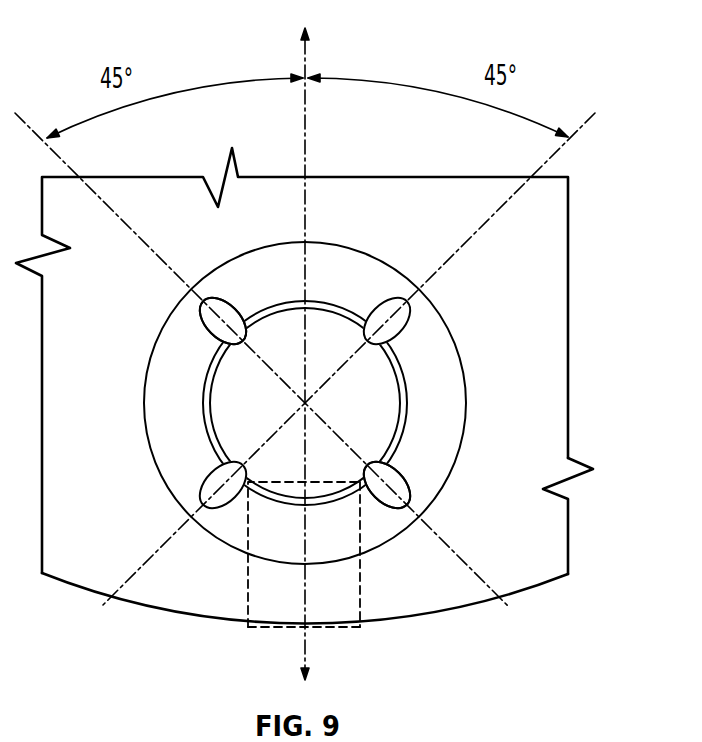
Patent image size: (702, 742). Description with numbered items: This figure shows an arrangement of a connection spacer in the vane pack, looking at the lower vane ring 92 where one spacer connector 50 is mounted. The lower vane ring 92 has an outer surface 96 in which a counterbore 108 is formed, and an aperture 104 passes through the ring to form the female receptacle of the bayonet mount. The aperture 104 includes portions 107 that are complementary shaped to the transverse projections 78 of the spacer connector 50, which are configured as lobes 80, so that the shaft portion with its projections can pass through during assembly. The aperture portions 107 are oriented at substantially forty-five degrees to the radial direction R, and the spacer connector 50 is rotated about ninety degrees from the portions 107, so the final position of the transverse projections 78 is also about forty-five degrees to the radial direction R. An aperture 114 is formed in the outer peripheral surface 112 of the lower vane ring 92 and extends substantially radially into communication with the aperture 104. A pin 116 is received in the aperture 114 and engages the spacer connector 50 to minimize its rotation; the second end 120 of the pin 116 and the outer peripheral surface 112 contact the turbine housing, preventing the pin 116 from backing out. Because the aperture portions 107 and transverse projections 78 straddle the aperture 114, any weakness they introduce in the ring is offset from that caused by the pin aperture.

The spacer connector 50 is at (243, 429).
The transverse projections 78 is at (236, 300).
The lobes 80 is at (226, 312).
The lower vane ring 92 is at (570, 340).
The outer surface 96 is at (544, 526).
The apertures 104 is at (200, 403).
The portions 107 is at (385, 313).
The counterbore 108 is at (443, 394).
The outer peripheral surface 112 is at (479, 604).
The aperture 114 is at (366, 628).
The pin 116 is at (353, 640).
The second end 120 is at (262, 630).
The radial direction R is at (305, 62).